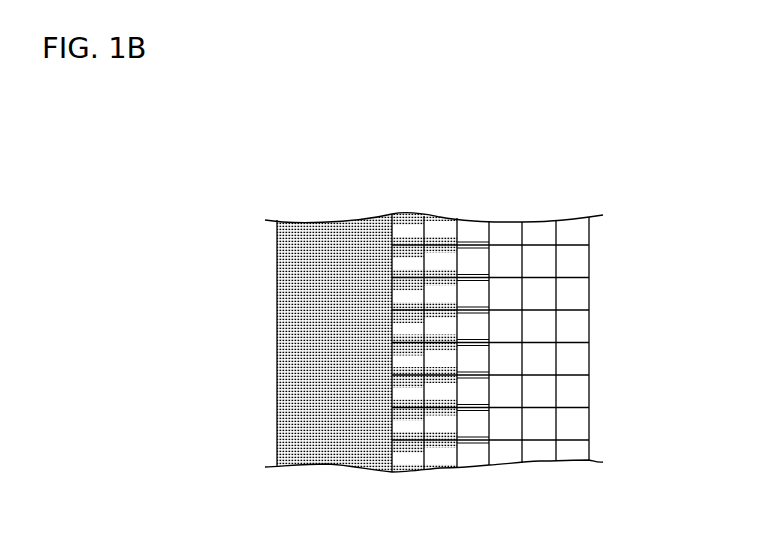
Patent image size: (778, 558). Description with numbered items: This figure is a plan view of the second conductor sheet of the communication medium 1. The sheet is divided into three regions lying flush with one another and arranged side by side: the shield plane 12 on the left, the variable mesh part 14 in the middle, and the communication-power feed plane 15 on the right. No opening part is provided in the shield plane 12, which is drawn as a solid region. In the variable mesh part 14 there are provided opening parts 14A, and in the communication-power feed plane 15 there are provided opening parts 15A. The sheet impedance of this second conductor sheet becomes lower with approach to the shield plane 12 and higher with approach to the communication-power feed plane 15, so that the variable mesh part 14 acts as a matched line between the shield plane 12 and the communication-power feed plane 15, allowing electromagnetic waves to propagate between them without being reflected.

The communication medium 1 is at (580, 151).
The shield plane 12 is at (392, 208).
The variable mesh part 14 is at (488, 208).
The opening parts 14A is at (473, 453).
The communication-power feed plane 15 is at (491, 208).
The opening parts 15A is at (572, 450).